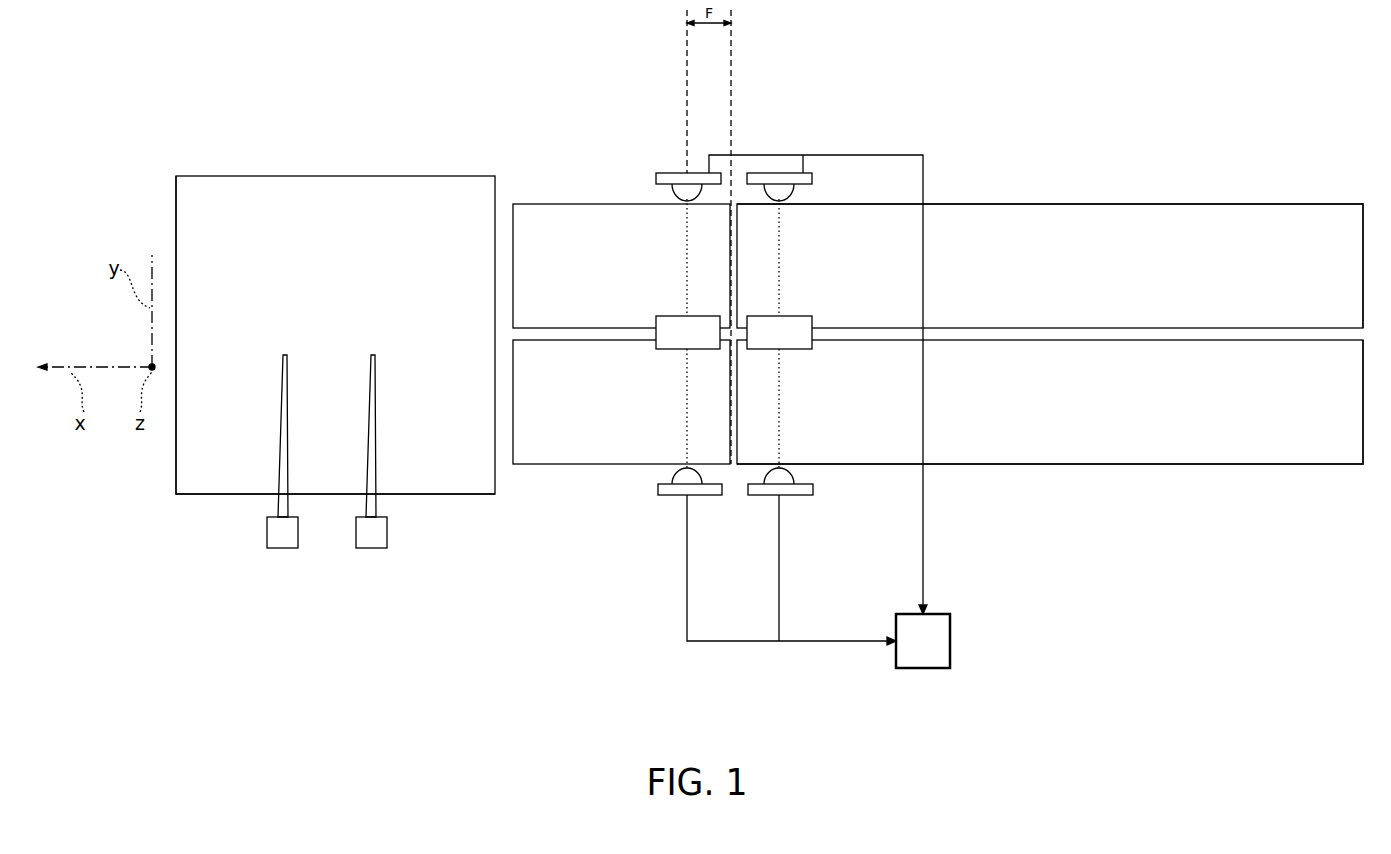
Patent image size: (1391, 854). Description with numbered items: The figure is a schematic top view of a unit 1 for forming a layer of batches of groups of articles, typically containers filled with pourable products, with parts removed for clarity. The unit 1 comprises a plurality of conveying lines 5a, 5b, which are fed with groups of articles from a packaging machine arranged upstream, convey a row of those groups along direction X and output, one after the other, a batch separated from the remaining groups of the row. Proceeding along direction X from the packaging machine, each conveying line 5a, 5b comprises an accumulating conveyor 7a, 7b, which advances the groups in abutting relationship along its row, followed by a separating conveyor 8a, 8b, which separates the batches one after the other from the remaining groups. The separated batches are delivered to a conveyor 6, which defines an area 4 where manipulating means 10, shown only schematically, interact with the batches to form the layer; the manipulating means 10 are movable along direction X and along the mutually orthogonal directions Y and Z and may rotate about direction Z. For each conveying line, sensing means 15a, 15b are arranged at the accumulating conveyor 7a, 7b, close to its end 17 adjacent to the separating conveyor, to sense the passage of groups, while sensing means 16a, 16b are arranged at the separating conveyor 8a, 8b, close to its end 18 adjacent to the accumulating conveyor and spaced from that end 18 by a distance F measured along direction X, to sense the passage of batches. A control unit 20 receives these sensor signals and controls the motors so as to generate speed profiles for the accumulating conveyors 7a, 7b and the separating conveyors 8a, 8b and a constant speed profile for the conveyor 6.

The unit for forming a layer 1 is at (1012, 107).
The area 4 is at (201, 486).
The conveyor 6 is at (368, 198).
The manipulating means 10 is at (360, 537).
The separating conveyor 8b is at (565, 215).
The separating conveyor 8a is at (586, 469).
The accumulating conveyor 7b is at (1186, 213).
The accumulating conveyor 7a is at (1096, 460).
The conveying line 5a is at (1277, 188).
The conveying line 5b is at (1282, 490).
The end of separating conveyor 18 is at (731, 466).
The end of accumulating conveyor 17 is at (737, 466).
The sensing means 16b is at (664, 166).
The sensing means 15b is at (776, 166).
The sensing means 16a is at (665, 505).
The sensing means 15a is at (805, 505).
The control unit 20 is at (950, 643).